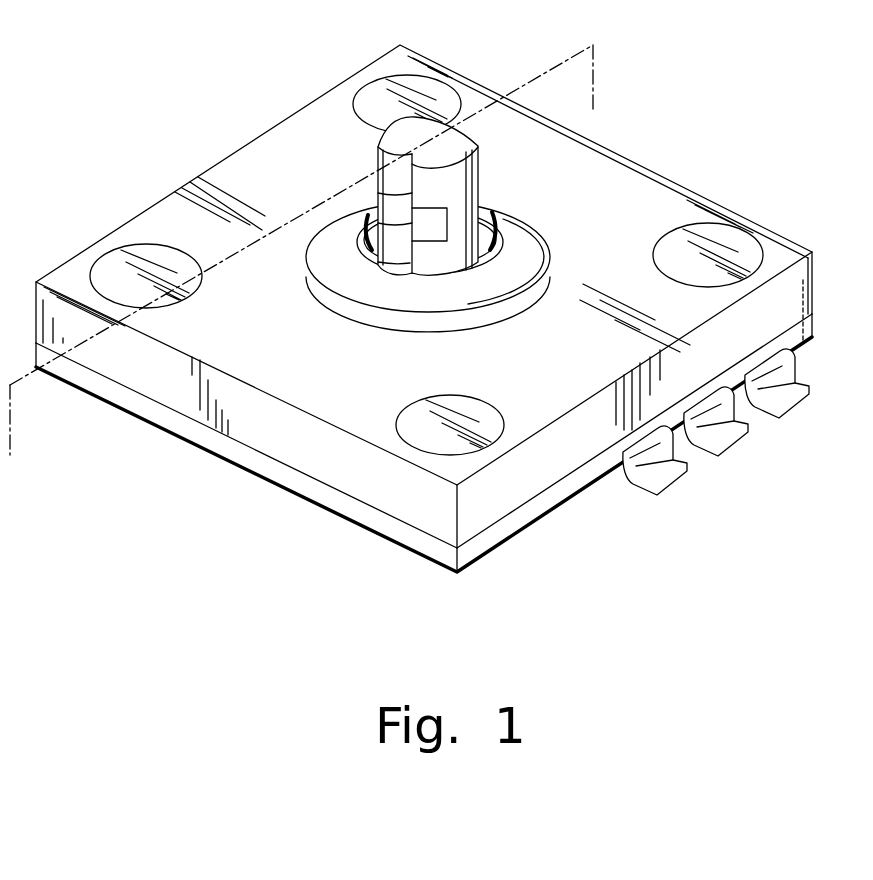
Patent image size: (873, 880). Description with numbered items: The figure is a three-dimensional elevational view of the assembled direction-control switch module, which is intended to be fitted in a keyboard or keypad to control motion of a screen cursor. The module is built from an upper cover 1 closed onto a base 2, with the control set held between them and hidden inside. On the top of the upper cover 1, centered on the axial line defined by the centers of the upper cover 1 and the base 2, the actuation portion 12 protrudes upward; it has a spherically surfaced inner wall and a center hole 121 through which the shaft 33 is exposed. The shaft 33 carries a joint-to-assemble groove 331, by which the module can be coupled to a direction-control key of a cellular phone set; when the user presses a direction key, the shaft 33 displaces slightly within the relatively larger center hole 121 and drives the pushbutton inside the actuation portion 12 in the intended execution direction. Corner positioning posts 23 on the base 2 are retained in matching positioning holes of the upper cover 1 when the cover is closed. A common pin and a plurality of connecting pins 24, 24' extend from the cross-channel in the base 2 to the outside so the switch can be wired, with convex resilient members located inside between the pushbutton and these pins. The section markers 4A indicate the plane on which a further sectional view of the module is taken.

The upper cover 1 is at (663, 193).
The base 2 is at (400, 530).
The actuation portion 12 is at (372, 313).
The center hole 121 is at (497, 237).
The positioning post 23 is at (730, 245).
The connecting pin 24 is at (684, 487).
The connecting pin 24' is at (752, 429).
The shaft 33 is at (423, 130).
The joint-to-assemble groove 331 is at (390, 205).
The section line 4A is at (14, 448).